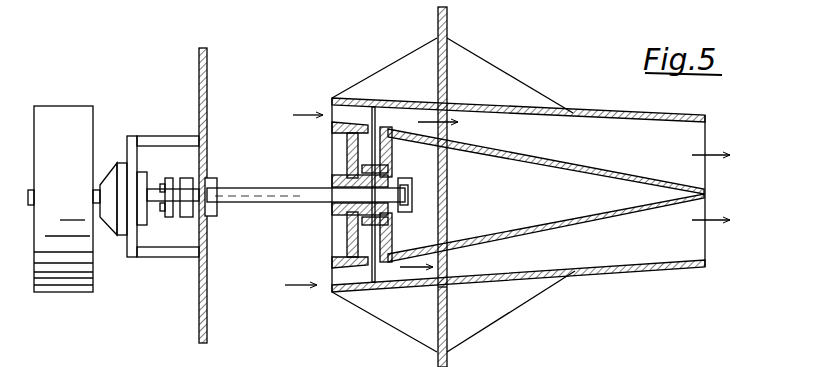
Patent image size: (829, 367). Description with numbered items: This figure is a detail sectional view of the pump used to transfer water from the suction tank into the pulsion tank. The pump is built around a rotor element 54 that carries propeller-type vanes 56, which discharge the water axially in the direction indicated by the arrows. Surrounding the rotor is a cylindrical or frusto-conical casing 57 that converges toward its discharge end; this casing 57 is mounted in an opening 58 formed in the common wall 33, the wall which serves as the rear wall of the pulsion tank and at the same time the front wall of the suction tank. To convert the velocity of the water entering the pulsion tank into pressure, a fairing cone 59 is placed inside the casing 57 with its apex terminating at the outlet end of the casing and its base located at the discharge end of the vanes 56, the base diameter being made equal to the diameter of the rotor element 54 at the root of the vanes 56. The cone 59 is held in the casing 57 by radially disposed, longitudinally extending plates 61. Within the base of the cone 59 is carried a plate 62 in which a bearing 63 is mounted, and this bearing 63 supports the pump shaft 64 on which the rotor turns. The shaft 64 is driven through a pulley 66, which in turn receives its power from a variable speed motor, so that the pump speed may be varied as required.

The rear wall 33 is at (450, 362).
The rotor element 54 is at (333, 213).
The vanes 56 is at (343, 113).
The casing 57 is at (597, 273).
The opening 58 is at (448, 285).
The fairing cone 59 is at (614, 170).
The plates 61 is at (688, 138).
The plate 62 is at (392, 236).
The bearing 63 is at (412, 195).
The pump shaft 64 is at (290, 187).
The pulley 66 is at (65, 292).